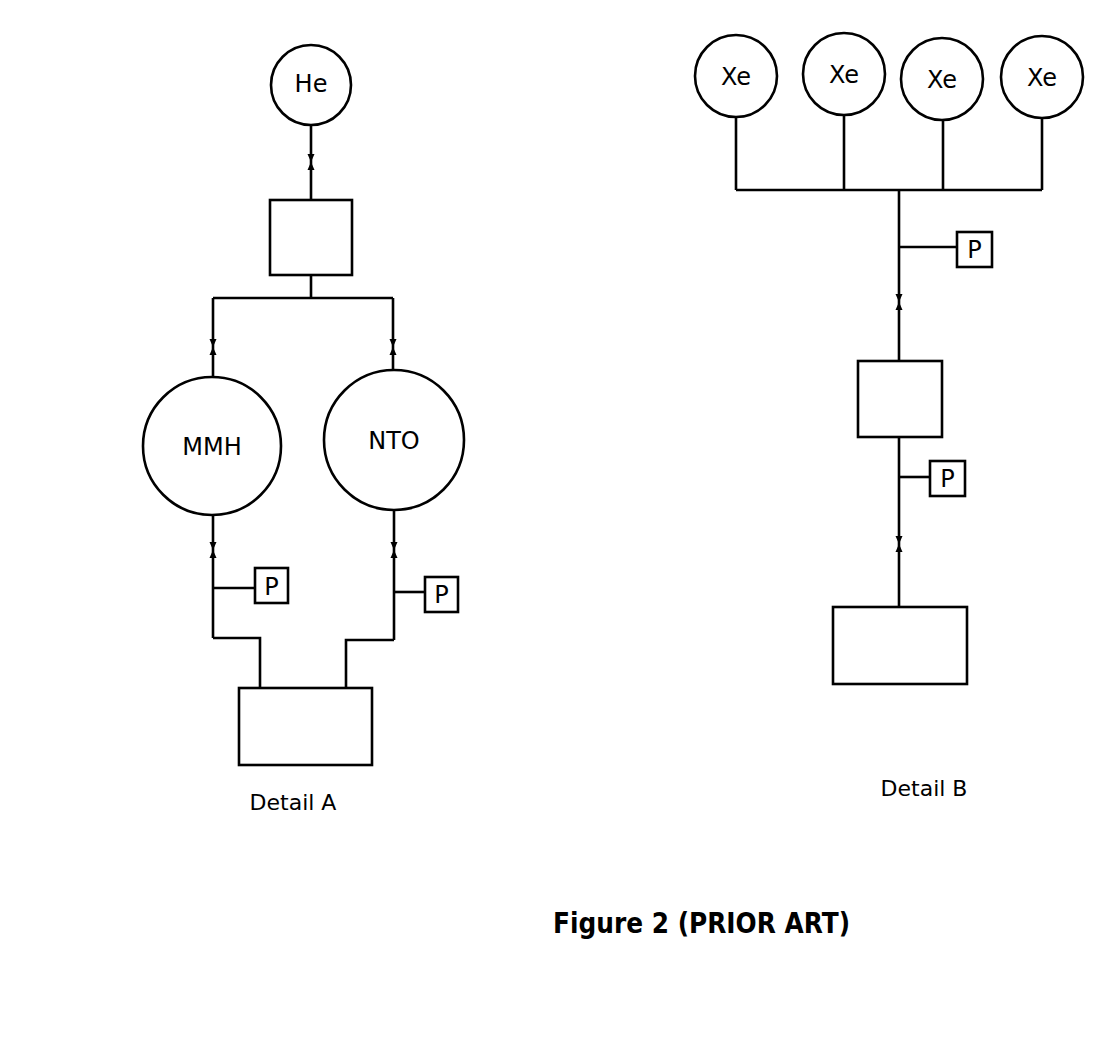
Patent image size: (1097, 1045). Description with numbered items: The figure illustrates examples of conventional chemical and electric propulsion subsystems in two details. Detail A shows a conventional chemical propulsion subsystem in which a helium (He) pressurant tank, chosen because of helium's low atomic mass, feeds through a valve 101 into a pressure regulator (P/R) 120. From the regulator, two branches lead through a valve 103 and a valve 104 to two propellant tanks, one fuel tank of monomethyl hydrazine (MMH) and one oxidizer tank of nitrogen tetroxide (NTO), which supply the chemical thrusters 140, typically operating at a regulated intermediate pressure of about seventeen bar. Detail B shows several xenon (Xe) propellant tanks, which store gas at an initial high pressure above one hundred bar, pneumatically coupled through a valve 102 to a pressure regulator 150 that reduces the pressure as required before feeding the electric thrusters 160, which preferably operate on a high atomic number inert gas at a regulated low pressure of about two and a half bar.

The helium isolation valve 101 is at (316, 164).
The pressure regulator 120 is at (352, 234).
The MMH tank valve 103 is at (210, 347).
The NTO tank valve 104 is at (398, 346).
The chemical thrusters 140 is at (372, 724).
The xenon isolation valve 102 is at (904, 297).
The xenon pressure regulator 150 is at (942, 410).
The electric thrusters 160 is at (967, 656).